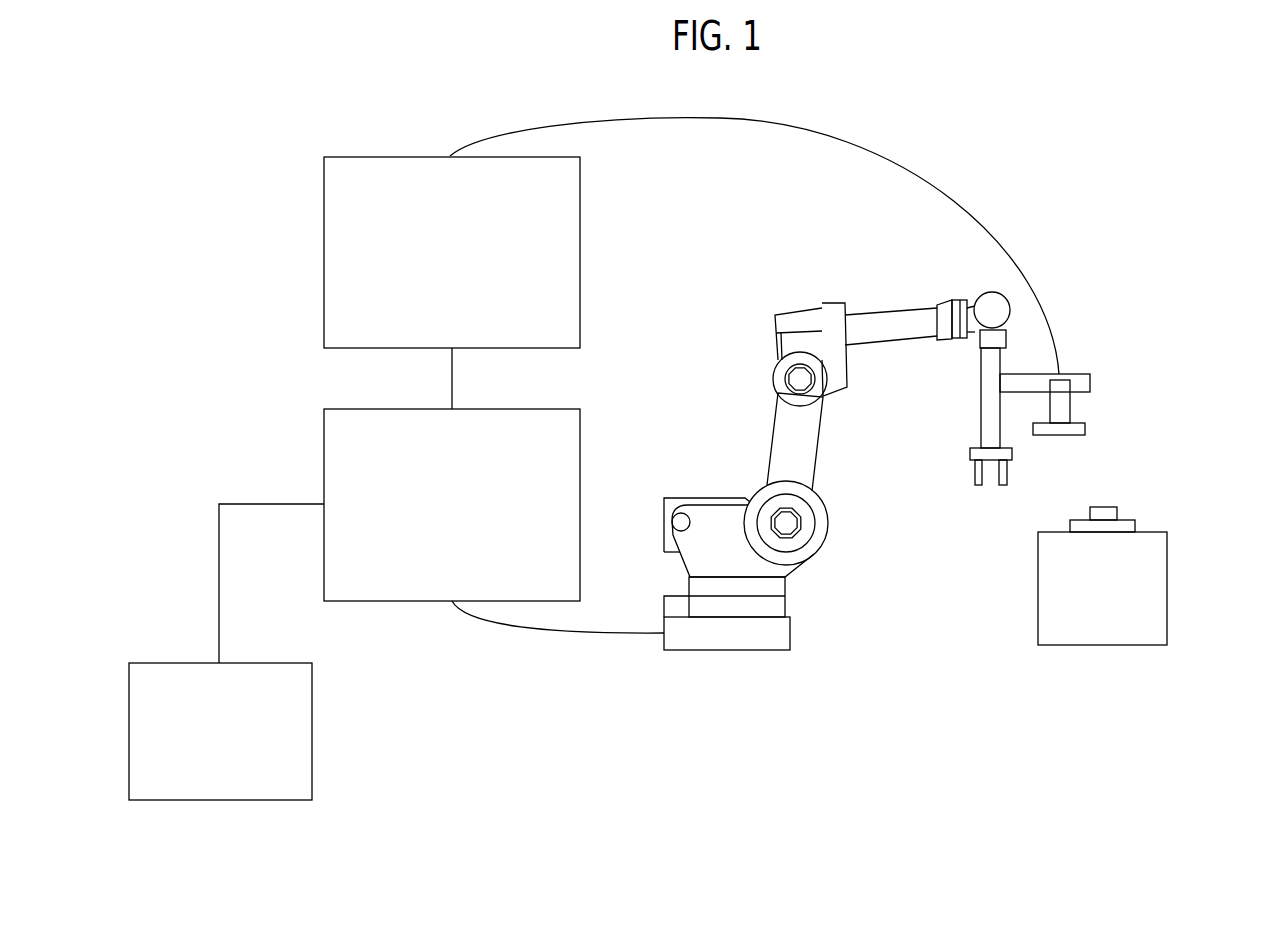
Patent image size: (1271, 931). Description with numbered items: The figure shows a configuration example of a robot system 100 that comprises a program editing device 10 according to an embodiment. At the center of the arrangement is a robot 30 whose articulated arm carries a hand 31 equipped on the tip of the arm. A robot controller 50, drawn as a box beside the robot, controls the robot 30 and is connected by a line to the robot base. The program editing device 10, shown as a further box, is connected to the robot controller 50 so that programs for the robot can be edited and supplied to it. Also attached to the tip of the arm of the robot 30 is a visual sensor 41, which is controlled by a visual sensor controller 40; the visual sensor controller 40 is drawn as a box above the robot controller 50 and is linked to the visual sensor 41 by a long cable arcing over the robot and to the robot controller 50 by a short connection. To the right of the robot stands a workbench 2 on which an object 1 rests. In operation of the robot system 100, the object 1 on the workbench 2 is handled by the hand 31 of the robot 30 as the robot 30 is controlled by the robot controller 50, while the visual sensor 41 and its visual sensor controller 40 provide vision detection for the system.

The object 1 is at (1125, 517).
The workbench 2 is at (1167, 578).
The program editing device 10 is at (312, 697).
The robot 30 is at (758, 438).
The hand 31 is at (977, 487).
The visual sensor controller 40 is at (324, 222).
The visual sensor 41 is at (1072, 405).
The robot controller 50 is at (324, 459).
The robot system 100 is at (1002, 188).